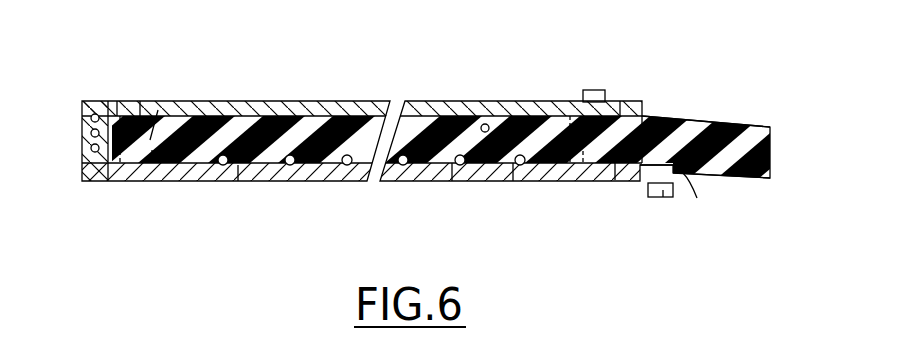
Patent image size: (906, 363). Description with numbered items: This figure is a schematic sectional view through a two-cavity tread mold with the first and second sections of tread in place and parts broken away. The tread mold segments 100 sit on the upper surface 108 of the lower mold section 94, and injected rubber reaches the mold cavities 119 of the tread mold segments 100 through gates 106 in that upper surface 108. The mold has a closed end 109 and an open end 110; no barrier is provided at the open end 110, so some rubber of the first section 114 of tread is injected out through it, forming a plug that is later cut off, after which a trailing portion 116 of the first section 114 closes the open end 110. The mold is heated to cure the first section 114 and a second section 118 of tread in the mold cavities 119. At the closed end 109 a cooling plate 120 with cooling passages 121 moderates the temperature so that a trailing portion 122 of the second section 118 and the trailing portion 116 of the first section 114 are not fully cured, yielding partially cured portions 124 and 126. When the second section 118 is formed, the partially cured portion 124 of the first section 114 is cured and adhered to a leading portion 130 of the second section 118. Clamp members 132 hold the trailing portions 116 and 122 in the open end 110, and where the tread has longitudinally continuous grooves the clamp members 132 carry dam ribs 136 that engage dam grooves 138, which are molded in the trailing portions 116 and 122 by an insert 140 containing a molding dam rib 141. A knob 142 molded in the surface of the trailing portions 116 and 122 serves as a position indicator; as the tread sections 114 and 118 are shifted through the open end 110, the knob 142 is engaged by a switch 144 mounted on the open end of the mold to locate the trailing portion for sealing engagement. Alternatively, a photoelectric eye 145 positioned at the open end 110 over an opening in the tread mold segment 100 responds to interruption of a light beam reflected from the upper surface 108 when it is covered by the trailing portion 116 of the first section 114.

The lower mold section 94 is at (452, 181).
The tread mold segments 100 is at (525, 107).
The gates 106 is at (210, 165).
The upper surface 108 is at (273, 163).
The closed end 109 is at (117, 108).
The open end 110 is at (572, 107).
The first section 114 is at (746, 120).
The trailing portion 116 is at (633, 165).
The second section 118 is at (452, 107).
The mold cavities 119 is at (380, 103).
The cooling plate 120 is at (83, 113).
The cooling passages 121 is at (88, 143).
The trailing portion 122 is at (152, 150).
The partially cured portion 124 is at (583, 180).
The partially cured portion 126 is at (120, 163).
The leading portion 130 is at (513, 181).
The clamp members 132 is at (640, 108).
The dam ribs 136 is at (618, 107).
The dam grooves 138 is at (158, 110).
The insert 140 is at (180, 108).
The molding dam rib 141 is at (145, 108).
The knob 142 is at (238, 181).
The switch 144 is at (660, 197).
The photoelectric eye 145 is at (597, 90).